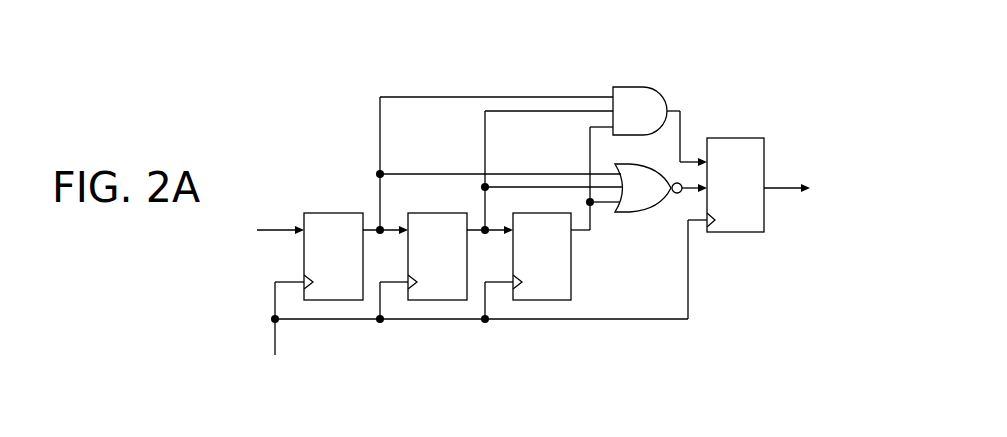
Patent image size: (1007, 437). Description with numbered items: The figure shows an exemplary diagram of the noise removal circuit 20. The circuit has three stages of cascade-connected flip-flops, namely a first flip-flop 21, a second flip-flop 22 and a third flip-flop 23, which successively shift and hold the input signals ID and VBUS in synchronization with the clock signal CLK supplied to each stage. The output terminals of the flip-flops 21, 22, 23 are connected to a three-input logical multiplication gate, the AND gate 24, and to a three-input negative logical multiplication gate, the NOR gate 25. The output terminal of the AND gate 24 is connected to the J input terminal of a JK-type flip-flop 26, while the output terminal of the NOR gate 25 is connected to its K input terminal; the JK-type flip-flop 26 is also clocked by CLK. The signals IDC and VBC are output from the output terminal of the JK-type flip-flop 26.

The noise removal circuit 20 is at (546, 216).
The flip-flop 21 is at (337, 213).
The flip-flop 22 is at (447, 213).
The flip-flop 23 is at (571, 275).
The 3-input logical multiplication gate 24 is at (632, 87).
The 3-input negative logical multiplication gate 25 is at (646, 213).
The JK-type flip-flop 26 is at (738, 138).